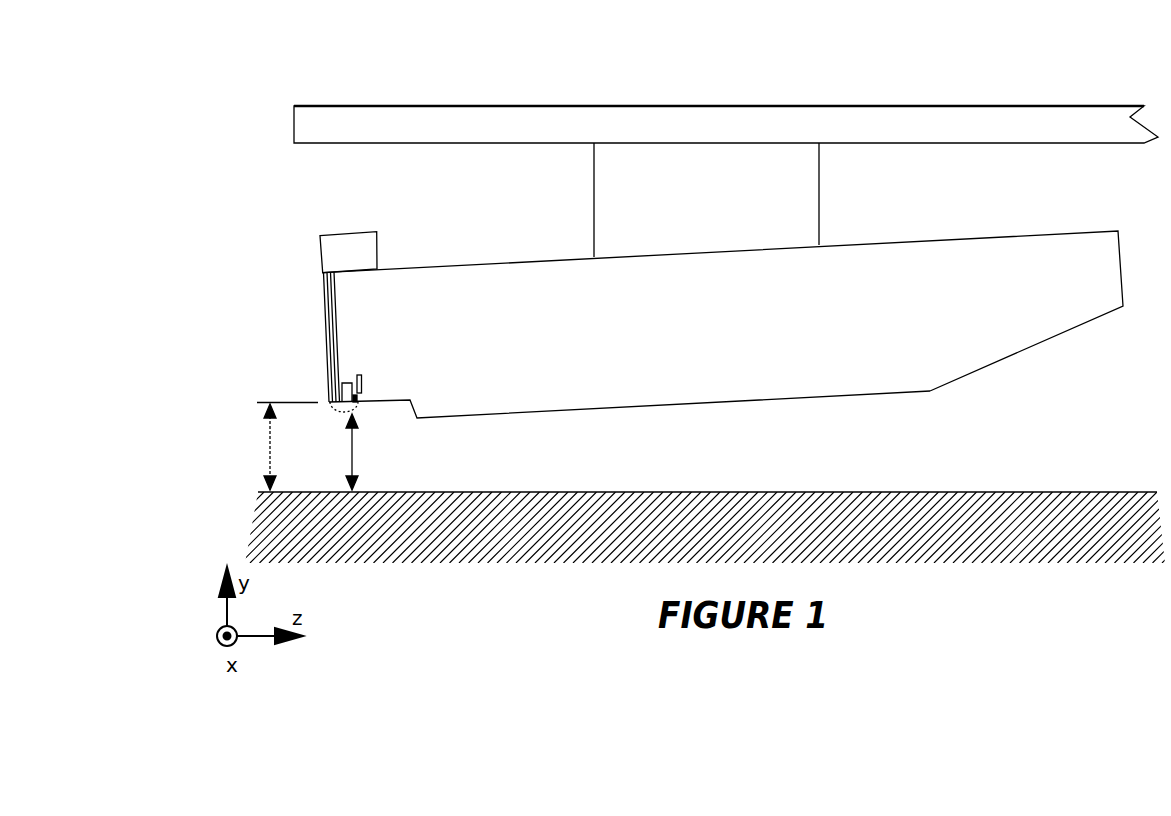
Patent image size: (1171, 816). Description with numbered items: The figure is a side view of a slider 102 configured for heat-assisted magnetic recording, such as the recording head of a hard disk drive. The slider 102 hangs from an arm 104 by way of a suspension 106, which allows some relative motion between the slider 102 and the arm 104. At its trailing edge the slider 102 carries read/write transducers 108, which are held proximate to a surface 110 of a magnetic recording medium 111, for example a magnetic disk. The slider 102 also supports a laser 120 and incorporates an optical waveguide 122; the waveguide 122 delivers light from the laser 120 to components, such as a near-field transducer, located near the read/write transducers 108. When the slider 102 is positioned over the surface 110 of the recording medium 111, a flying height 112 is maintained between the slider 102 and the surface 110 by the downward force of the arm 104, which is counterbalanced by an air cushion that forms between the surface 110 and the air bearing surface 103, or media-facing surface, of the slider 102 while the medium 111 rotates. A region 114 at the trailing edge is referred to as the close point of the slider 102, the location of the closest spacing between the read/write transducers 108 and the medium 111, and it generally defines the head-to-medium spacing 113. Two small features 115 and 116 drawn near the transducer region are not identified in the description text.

The slider 102 is at (987, 238).
The air bearing surface 103 is at (538, 413).
The arm 104 is at (1052, 117).
The suspension 106 is at (818, 188).
The read/write transducers 108 is at (340, 385).
The surface 110 is at (988, 492).
The magnetic recording medium 111 is at (1008, 547).
The flying height 112 is at (269, 447).
The head-to-medium spacing 113 is at (330, 452).
The close point region 114 is at (360, 410).
The nozzle 115 is at (357, 397).
The nozzle plate element 116 is at (358, 373).
The laser 120 is at (348, 243).
The optical waveguide 122 is at (332, 310).